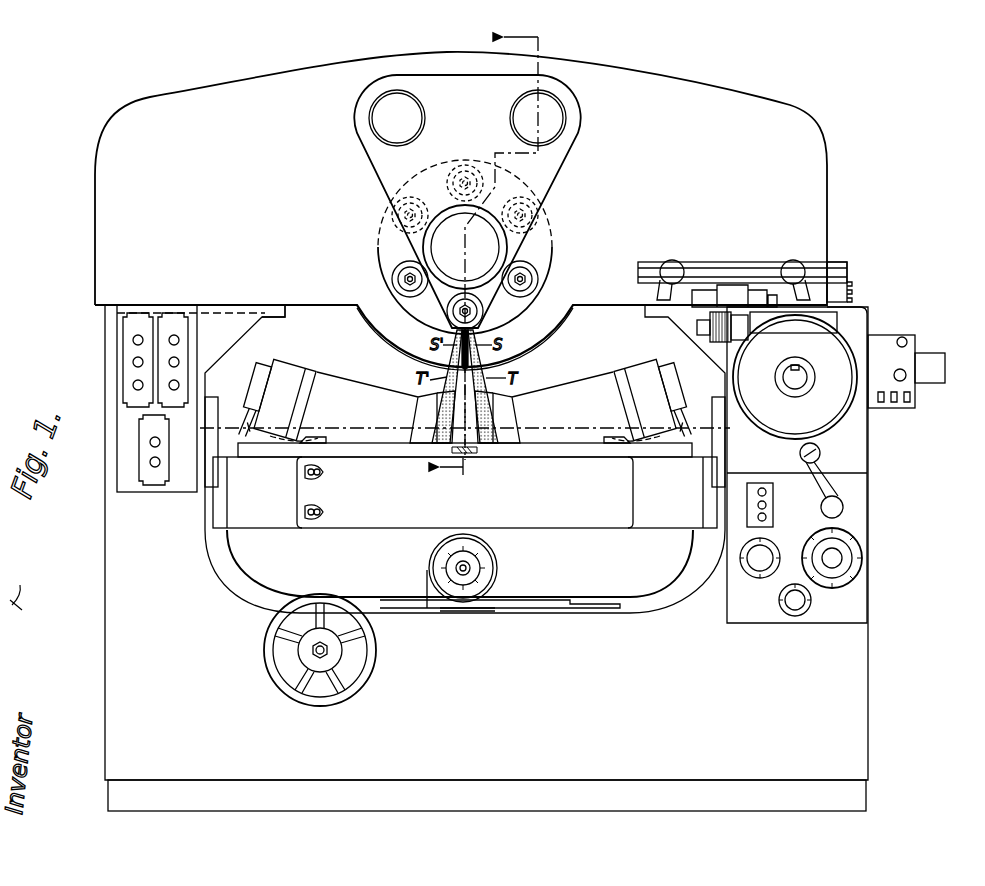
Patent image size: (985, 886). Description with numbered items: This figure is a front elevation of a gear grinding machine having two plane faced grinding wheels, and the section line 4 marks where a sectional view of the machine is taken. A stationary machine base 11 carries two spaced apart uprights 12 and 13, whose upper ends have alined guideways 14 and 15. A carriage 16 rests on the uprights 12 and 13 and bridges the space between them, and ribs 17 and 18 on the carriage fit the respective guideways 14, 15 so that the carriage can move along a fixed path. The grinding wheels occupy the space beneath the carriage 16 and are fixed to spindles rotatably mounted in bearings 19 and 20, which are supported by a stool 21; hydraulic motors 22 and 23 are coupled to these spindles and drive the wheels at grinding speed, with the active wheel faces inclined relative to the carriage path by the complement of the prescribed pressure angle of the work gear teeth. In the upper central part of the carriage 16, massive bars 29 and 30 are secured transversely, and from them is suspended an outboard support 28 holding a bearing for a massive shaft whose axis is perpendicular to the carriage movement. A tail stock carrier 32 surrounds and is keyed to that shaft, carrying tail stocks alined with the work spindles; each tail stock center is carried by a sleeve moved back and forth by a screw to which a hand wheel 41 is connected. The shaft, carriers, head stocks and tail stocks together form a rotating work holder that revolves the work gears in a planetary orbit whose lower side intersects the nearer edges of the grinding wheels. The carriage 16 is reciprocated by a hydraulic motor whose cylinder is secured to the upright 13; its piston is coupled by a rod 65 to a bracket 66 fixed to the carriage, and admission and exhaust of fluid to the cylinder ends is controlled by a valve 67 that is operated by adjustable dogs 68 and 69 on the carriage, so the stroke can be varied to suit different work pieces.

The section line 4- 4 is at (499, 263).
The stationary machine base 11 is at (848, 713).
The upright 12 is at (107, 363).
The upright 13 is at (855, 328).
The guideways 14 is at (682, 315).
The guideways 15 is at (242, 320).
The carriage 16 is at (803, 180).
The ribs 17 is at (643, 317).
The ribs 18 is at (282, 318).
The bearing 19 is at (568, 388).
The bearing 20 is at (352, 395).
The stool 21 is at (632, 578).
The hydraulic motor 22 is at (637, 367).
The hydraulic motor 23 is at (295, 370).
The outboard support 28 is at (537, 175).
The bar 29 is at (552, 123).
The bar 30 is at (380, 128).
The tail stock carrier 32 is at (383, 235).
The hand wheel 41 is at (393, 277).
The rod 65 is at (852, 292).
The bracket 66 is at (837, 268).
The valve 67 is at (728, 285).
The adjustable dog 68 is at (806, 262).
The adjustable dog 69 is at (668, 262).